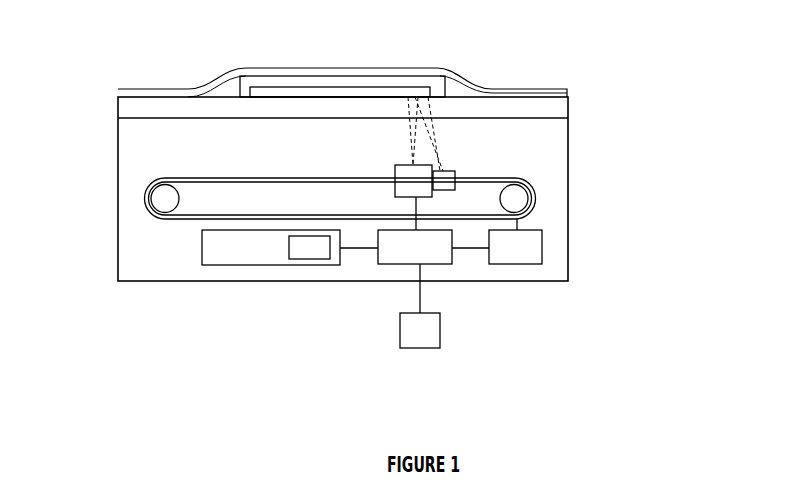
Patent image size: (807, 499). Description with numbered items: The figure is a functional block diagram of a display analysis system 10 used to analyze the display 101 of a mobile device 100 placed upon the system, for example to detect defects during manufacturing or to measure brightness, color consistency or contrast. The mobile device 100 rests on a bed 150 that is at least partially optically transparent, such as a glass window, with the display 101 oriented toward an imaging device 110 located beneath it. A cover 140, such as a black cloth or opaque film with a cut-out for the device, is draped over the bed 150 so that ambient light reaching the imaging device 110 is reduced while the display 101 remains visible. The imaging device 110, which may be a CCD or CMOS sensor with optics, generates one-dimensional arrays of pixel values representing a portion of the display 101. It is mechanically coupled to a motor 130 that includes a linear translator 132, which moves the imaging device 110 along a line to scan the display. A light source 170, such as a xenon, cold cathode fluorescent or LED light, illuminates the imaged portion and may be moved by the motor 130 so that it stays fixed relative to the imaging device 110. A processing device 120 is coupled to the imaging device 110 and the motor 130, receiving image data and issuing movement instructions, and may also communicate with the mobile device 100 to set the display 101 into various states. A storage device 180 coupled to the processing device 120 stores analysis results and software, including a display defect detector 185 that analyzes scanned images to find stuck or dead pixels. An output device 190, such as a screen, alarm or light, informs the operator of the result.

The display analysis system 10 is at (606, 74).
The mobile device 100 is at (392, 80).
The display 101 is at (432, 88).
The imaging device 110 is at (396, 165).
The processing device 120 is at (412, 265).
The motor 130 is at (542, 237).
The linear translator 132 is at (530, 203).
The cover 140 is at (282, 66).
The bed 150 is at (118, 110).
The light source 170 is at (448, 172).
The storage device 180 is at (214, 265).
The display defect detector 185 is at (323, 260).
The output device 190 is at (420, 348).